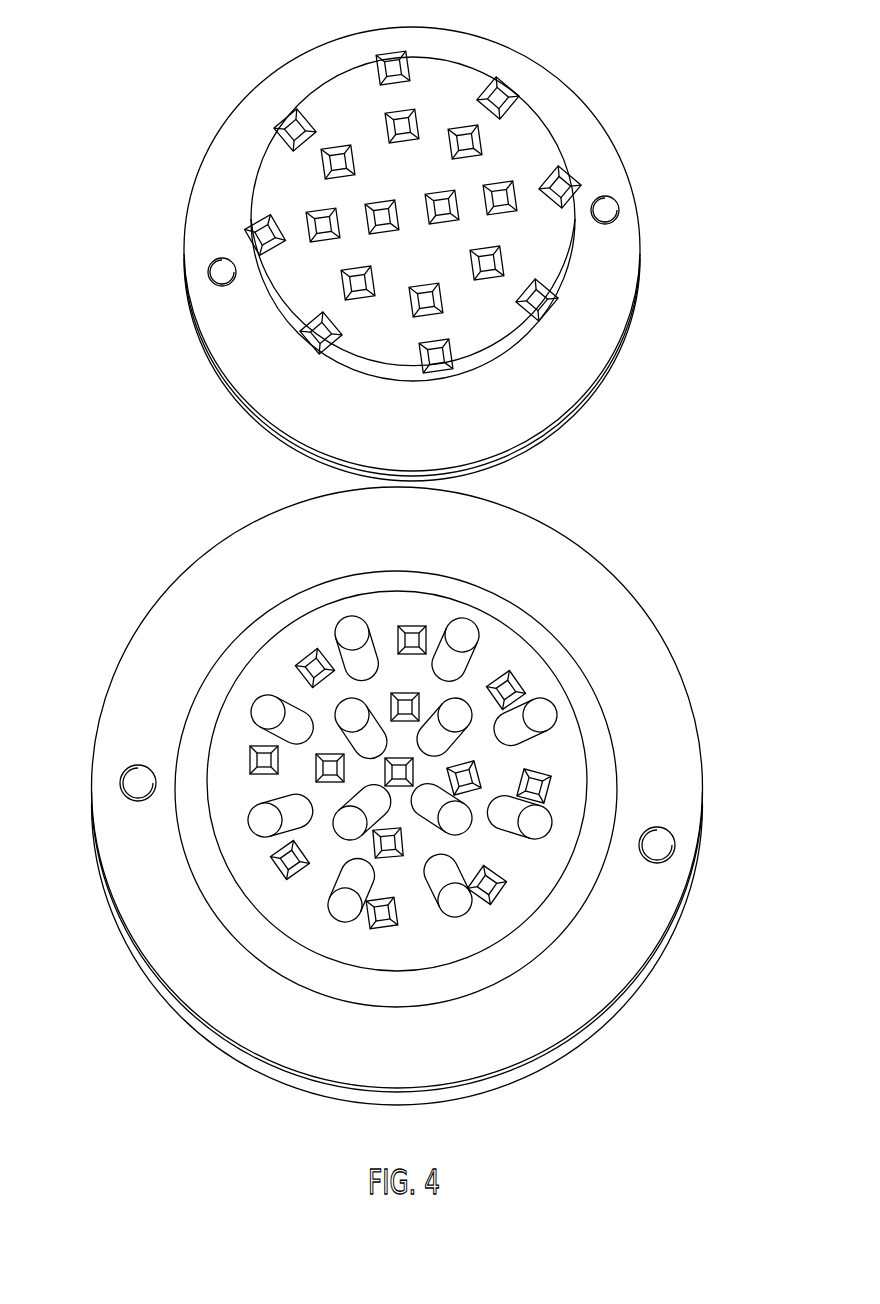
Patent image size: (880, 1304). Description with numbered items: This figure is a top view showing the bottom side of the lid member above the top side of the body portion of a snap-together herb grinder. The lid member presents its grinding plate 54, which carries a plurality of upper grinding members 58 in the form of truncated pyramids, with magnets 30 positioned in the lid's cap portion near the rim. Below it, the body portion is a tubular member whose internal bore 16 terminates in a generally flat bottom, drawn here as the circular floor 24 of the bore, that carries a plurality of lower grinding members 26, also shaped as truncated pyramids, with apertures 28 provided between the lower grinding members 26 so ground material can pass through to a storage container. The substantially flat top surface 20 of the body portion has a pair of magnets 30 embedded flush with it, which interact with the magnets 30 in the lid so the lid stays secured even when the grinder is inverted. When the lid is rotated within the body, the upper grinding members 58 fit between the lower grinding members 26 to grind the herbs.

The internal bore 16 is at (590, 725).
The top surface 20 is at (598, 587).
The LED circuit board 24 is at (273, 670).
The lower grinding members 26 is at (262, 757).
The apertures 28 is at (265, 822).
The magnets 30 is at (222, 273).
The grinding plate portion 54 is at (270, 178).
The upper grinding members 58 is at (567, 170).